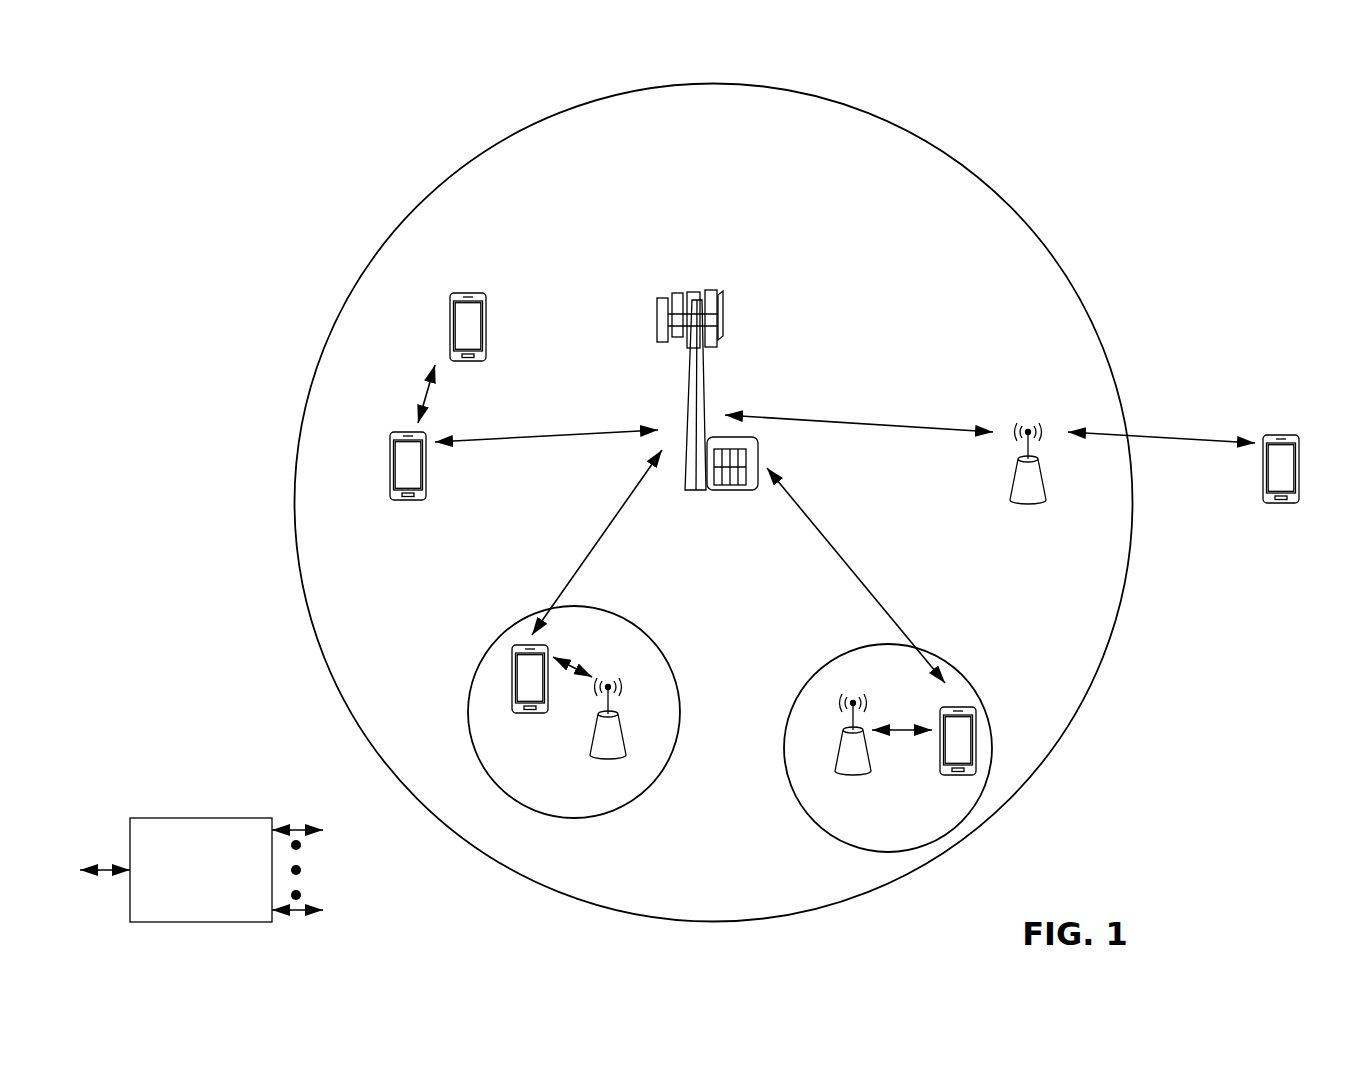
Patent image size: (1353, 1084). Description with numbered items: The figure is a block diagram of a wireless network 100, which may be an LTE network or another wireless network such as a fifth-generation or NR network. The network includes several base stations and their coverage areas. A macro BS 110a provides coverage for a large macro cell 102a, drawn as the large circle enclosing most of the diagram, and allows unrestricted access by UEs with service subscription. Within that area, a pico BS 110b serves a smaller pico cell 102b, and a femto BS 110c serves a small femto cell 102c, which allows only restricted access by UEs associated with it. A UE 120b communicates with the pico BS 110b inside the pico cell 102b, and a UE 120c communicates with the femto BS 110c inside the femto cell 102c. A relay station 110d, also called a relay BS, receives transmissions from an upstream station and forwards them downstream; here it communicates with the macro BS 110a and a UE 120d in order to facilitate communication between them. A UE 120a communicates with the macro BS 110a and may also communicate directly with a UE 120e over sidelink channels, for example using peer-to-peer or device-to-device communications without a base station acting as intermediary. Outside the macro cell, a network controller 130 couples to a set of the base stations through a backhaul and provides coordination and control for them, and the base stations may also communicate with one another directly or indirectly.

The wireless network 100 is at (188, 80).
The macro cell 102a is at (990, 188).
The pico cell 102b is at (663, 652).
The femto cell 102c is at (830, 662).
The macro BS 110a is at (700, 290).
The pico BS 110b is at (627, 738).
The femto BS 110c is at (837, 758).
The relay station 110d is at (1028, 425).
The UE 120a is at (390, 463).
The UE 120b is at (514, 714).
The UE 120c is at (944, 776).
The UE 120d is at (1293, 435).
The UE 120e is at (450, 310).
The network controller 130 is at (200, 818).